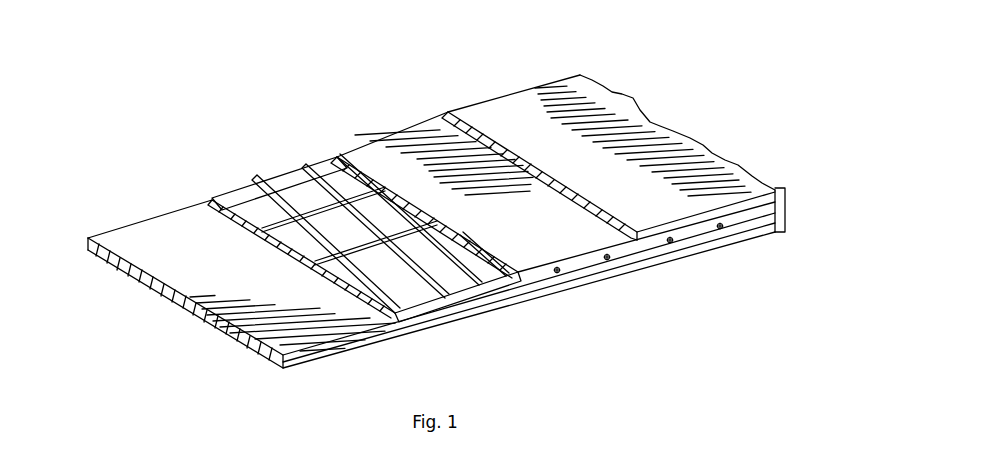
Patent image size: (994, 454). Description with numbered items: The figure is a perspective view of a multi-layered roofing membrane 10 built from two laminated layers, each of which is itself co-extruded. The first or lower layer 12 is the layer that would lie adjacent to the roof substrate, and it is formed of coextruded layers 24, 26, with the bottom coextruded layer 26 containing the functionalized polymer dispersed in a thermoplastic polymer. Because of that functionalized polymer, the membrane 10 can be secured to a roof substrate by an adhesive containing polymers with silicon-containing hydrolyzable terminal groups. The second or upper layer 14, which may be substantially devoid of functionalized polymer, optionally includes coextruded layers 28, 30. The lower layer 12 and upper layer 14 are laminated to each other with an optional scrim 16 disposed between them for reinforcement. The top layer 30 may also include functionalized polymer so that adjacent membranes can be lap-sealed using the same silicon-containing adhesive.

The membrane 10 is at (716, 118).
The lower layer 12 is at (788, 218).
The upper layer 14 is at (787, 198).
The scrim 16 is at (285, 178).
The coextruded layer 24 is at (253, 210).
The bottom coextruded layer 26 is at (160, 247).
The coextruded layer 28 is at (390, 146).
The top layer 30 is at (498, 113).